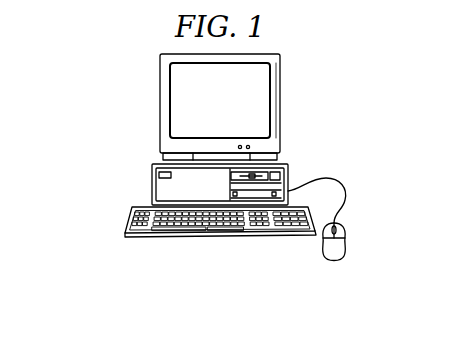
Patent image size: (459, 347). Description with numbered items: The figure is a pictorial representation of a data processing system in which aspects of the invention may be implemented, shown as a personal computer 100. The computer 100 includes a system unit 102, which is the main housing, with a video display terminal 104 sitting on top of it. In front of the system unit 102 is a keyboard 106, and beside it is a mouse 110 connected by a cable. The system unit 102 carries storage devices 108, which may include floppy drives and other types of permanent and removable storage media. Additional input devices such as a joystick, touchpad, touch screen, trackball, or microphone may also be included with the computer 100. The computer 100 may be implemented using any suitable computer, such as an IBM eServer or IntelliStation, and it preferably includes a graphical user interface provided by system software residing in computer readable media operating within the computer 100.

The computer 100 is at (106, 92).
The system unit 102 is at (152, 181).
The video display terminal 104 is at (280, 103).
The keyboard 106 is at (145, 238).
The storage devices 108 is at (284, 177).
The mouse 110 is at (334, 261).